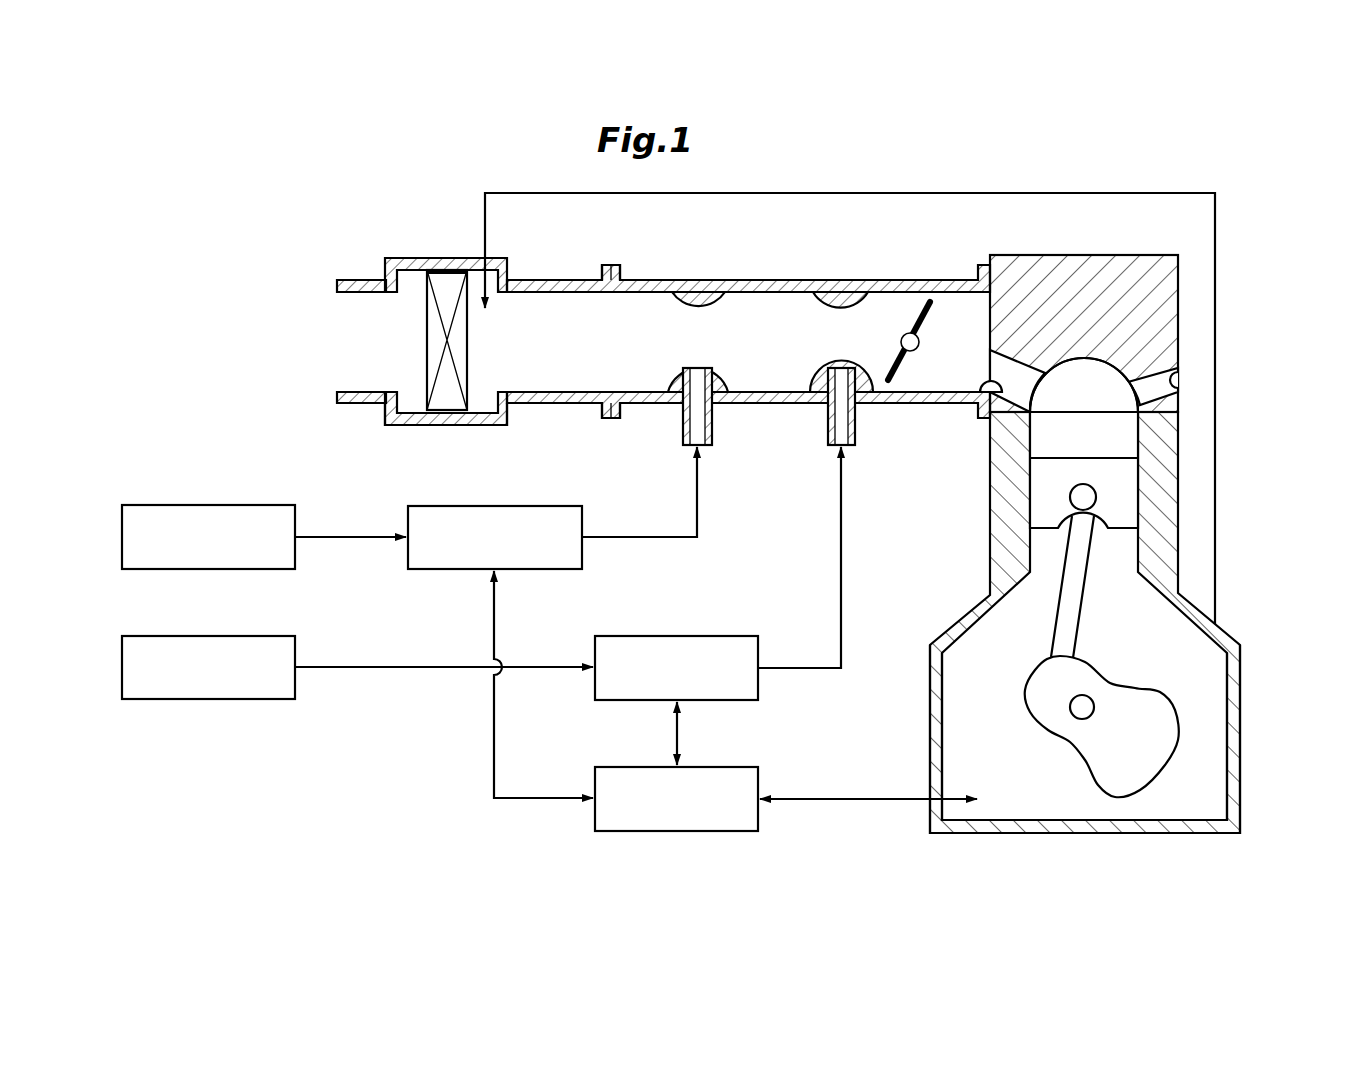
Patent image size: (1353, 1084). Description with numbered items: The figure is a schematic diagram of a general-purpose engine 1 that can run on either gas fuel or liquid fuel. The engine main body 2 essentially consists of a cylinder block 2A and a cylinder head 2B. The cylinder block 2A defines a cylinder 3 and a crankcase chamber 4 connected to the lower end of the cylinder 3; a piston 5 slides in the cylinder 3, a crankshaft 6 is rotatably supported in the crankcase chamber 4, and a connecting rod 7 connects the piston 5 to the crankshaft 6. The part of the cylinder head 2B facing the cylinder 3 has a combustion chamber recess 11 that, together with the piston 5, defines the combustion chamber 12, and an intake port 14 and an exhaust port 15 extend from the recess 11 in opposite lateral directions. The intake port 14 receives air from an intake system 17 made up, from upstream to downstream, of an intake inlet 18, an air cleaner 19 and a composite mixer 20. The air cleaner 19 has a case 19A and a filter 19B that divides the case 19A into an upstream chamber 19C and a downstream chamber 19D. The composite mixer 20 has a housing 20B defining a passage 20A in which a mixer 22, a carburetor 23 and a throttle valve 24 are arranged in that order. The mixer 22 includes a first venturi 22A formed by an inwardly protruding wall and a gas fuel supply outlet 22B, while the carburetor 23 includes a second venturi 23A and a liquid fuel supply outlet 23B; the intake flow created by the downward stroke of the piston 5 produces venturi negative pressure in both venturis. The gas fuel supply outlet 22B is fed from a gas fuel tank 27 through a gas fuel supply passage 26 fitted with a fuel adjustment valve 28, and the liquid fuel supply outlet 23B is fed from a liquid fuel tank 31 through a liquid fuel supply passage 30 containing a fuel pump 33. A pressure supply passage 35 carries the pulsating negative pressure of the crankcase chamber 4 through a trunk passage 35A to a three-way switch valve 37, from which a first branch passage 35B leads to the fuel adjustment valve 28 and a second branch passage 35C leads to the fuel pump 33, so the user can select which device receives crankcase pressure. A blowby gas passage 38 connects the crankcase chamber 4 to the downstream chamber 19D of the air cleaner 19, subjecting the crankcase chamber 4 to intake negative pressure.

The engine 1 is at (315, 180).
The engine main body 2 is at (1237, 632).
The cylinder block 2A is at (1240, 704).
The cylinder head 2B is at (1085, 262).
The cylinder 3 is at (1133, 553).
The crankcase chamber 4 is at (989, 675).
The piston 5 is at (1040, 489).
The crankshaft 6 is at (1076, 708).
The connecting rod 7 is at (1068, 641).
The combustion chamber recess 11 is at (1069, 362).
The combustion chamber 12 is at (1040, 409).
The intake port 14 is at (982, 382).
The exhaust port 15 is at (1170, 381).
The intake system 17 is at (450, 190).
The intake inlet 18 is at (352, 294).
The air cleaner 19 is at (440, 253).
The case 19A is at (400, 426).
The filter 19B is at (452, 406).
The upstream chamber 19C is at (426, 375).
The downstream chamber 19D is at (468, 351).
The composite mixer 20 is at (773, 278).
The passage 20A is at (653, 295).
The housing 20B is at (635, 285).
The mixer 22 is at (695, 278).
The first venturi 22A is at (698, 309).
The gas fuel supply outlet 22B is at (683, 428).
The carburetor 23 is at (841, 278).
The second venturi 23A is at (842, 309).
The liquid fuel supply outlet 23B is at (828, 428).
The throttle valve 24 is at (921, 347).
The gas fuel supply passage 26 is at (340, 540).
The gas fuel tank 27 is at (212, 571).
The fuel adjustment valve 28 is at (524, 504).
The liquid fuel supply passage 30 is at (388, 670).
The liquid fuel tank 31 is at (222, 700).
The fuel pump 33 is at (718, 636).
The pressure supply passage 35 is at (828, 803).
The trunk passage 35A is at (872, 797).
The first branch passage 35B is at (492, 780).
The second branch passage 35C is at (673, 740).
The switch valve 37 is at (688, 832).
The blowby gas passage 38 is at (1218, 475).